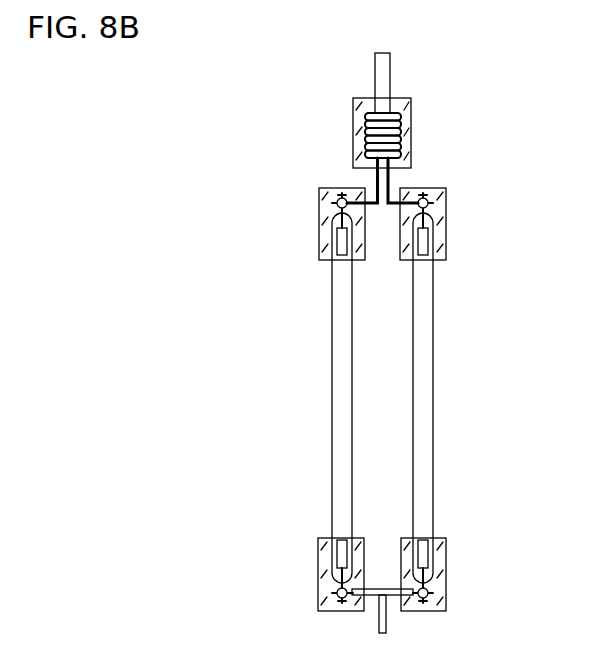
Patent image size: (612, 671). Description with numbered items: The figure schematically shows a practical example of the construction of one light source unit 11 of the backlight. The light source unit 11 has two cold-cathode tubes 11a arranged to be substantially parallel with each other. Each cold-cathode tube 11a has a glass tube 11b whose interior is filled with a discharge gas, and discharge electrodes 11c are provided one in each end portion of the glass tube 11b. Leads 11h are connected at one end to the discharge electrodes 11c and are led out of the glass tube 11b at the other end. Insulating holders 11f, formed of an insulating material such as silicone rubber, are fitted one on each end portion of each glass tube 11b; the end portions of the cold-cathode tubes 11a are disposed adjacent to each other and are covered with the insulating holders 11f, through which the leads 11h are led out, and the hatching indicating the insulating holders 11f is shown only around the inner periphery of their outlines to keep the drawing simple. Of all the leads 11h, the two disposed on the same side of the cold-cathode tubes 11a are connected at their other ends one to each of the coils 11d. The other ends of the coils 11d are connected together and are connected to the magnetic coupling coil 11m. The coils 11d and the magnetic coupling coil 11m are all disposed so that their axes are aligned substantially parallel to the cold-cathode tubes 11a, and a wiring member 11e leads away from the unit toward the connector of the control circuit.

The light source unit 11 is at (468, 465).
The cold-cathode tube 11a is at (315, 392).
The glass tube 11b is at (332, 363).
The discharge electrode 11c is at (337, 240).
The coil 11d is at (364, 130).
The wiring member 11e is at (383, 66).
The insulating holder 11f is at (411, 100).
The lead 11h is at (334, 220).
The magnetic coupling coil 11m is at (368, 114).